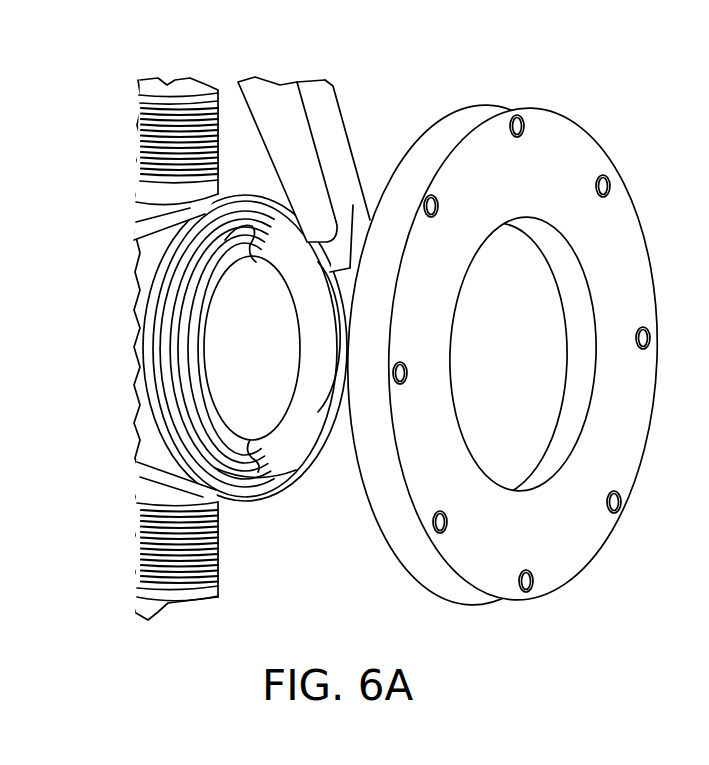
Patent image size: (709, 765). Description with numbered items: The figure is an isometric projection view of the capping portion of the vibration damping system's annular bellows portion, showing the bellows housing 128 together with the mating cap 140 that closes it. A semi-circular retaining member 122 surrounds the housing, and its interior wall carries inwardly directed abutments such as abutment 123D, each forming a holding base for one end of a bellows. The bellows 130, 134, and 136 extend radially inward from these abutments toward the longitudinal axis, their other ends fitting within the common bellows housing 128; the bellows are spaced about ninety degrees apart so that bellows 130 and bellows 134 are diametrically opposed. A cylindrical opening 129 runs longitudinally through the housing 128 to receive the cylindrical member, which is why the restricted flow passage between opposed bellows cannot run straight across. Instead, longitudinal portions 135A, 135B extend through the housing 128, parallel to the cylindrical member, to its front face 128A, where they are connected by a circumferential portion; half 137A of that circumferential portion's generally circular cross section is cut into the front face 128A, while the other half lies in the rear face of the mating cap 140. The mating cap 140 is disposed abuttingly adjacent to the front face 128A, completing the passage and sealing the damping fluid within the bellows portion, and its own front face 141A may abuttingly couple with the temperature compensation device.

The retaining member 122 is at (310, 87).
The inwardly directed abutment 123D is at (353, 212).
The bellows housing 128 is at (140, 255).
The front face 128A is at (281, 444).
The cylindrical opening 129 is at (203, 338).
The bellows 130 is at (150, 570).
The bellows 134 is at (146, 149).
The longitudinal portion 135A is at (252, 457).
The longitudinal portion 135B is at (256, 236).
The bellows 136 is at (332, 398).
The half of circumferential portion 137A is at (198, 402).
The mating cap 140 is at (468, 115).
The front face 141A is at (563, 165).